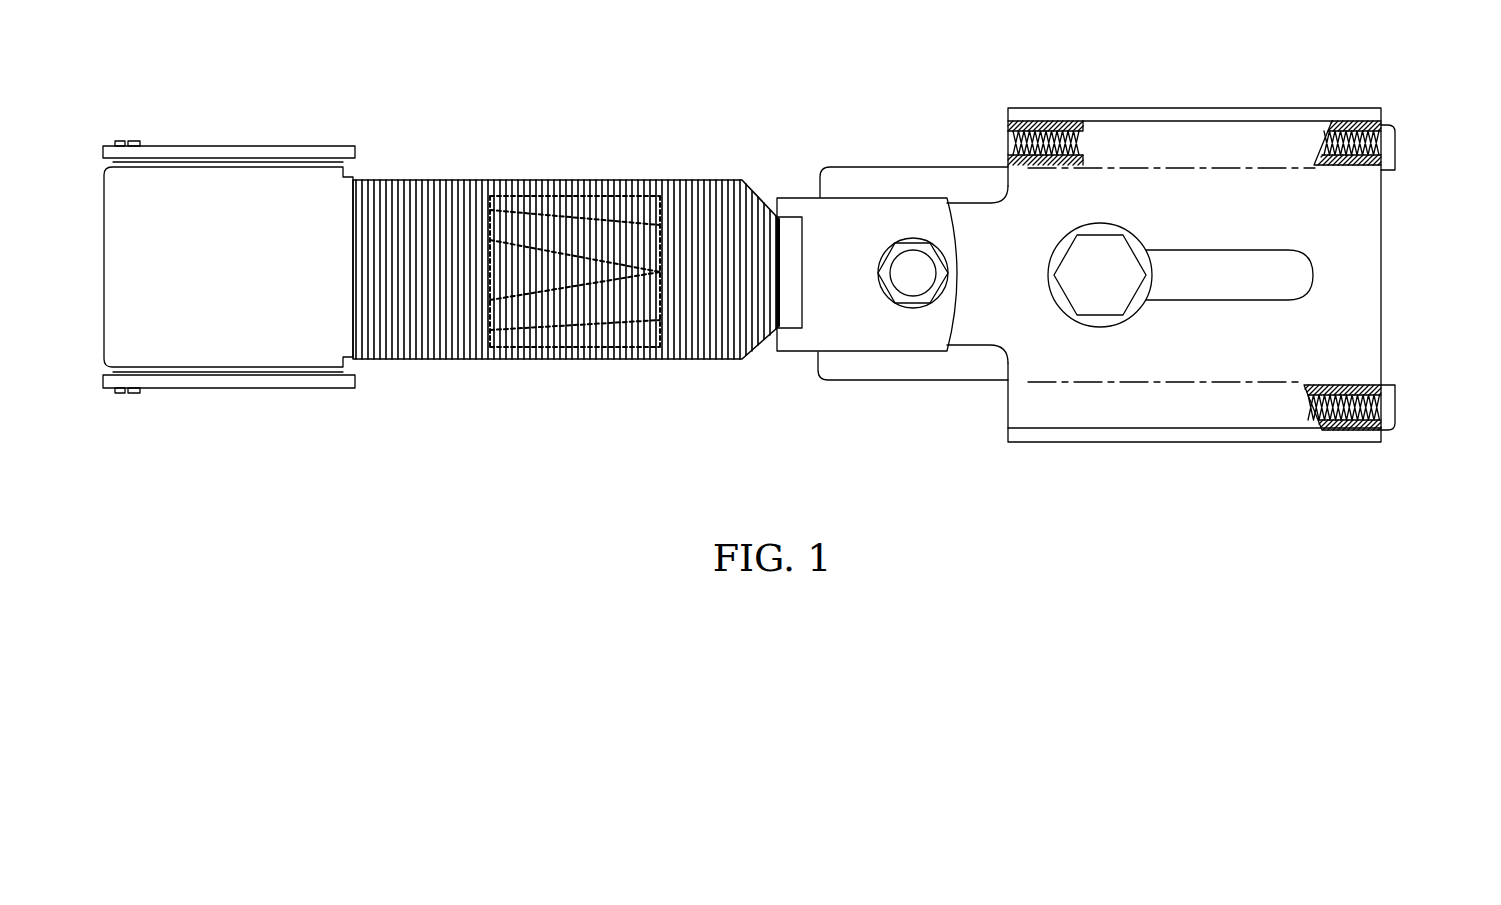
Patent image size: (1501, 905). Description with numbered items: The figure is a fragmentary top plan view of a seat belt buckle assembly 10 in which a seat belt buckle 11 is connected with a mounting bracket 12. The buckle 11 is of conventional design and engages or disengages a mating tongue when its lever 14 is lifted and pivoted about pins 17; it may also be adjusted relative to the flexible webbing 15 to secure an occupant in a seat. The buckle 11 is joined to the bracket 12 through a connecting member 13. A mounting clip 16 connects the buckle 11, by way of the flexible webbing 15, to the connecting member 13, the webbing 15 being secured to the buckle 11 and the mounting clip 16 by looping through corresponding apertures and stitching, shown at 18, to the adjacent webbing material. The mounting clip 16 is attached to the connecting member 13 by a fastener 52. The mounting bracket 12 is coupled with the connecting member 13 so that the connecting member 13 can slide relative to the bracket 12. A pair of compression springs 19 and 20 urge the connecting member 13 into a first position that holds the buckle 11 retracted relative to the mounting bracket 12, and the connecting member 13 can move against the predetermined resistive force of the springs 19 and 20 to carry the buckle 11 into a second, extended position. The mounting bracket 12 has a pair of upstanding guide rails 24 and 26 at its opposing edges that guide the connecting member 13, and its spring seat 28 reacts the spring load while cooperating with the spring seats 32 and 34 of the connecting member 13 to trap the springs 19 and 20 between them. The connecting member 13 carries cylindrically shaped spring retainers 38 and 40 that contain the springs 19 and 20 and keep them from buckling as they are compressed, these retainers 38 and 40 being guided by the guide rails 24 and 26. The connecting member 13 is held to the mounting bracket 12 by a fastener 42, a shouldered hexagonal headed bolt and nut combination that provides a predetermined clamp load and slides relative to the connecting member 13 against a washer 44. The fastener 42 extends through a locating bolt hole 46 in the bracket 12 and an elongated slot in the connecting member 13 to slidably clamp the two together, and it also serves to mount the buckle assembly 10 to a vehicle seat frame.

The seat belt buckle assembly 10 is at (576, 108).
The seat belt buckle 11 is at (231, 146).
The mounting bracket 12 is at (872, 167).
The connecting member 13 is at (992, 350).
The lever 14 is at (173, 286).
The flexible webbing 15 is at (612, 180).
The mounting clip 16 is at (790, 196).
The pins 17 is at (118, 143).
The stitching 18 is at (633, 347).
The compression spring 19 is at (1345, 125).
The compression spring 20 is at (1350, 430).
The guide rail 24 is at (1058, 110).
The guide rail 26 is at (1193, 449).
The spring seat 28 is at (1006, 142).
The spring seat 32 is at (1396, 147).
The spring seat 34 is at (1396, 415).
The spring retainer 38 is at (1236, 157).
The spring retainer 40 is at (1171, 412).
The fastener 42 is at (1092, 235).
The washer 44 is at (1133, 232).
The locating bolt hole 46 is at (1194, 250).
The fastener 52 is at (878, 292).